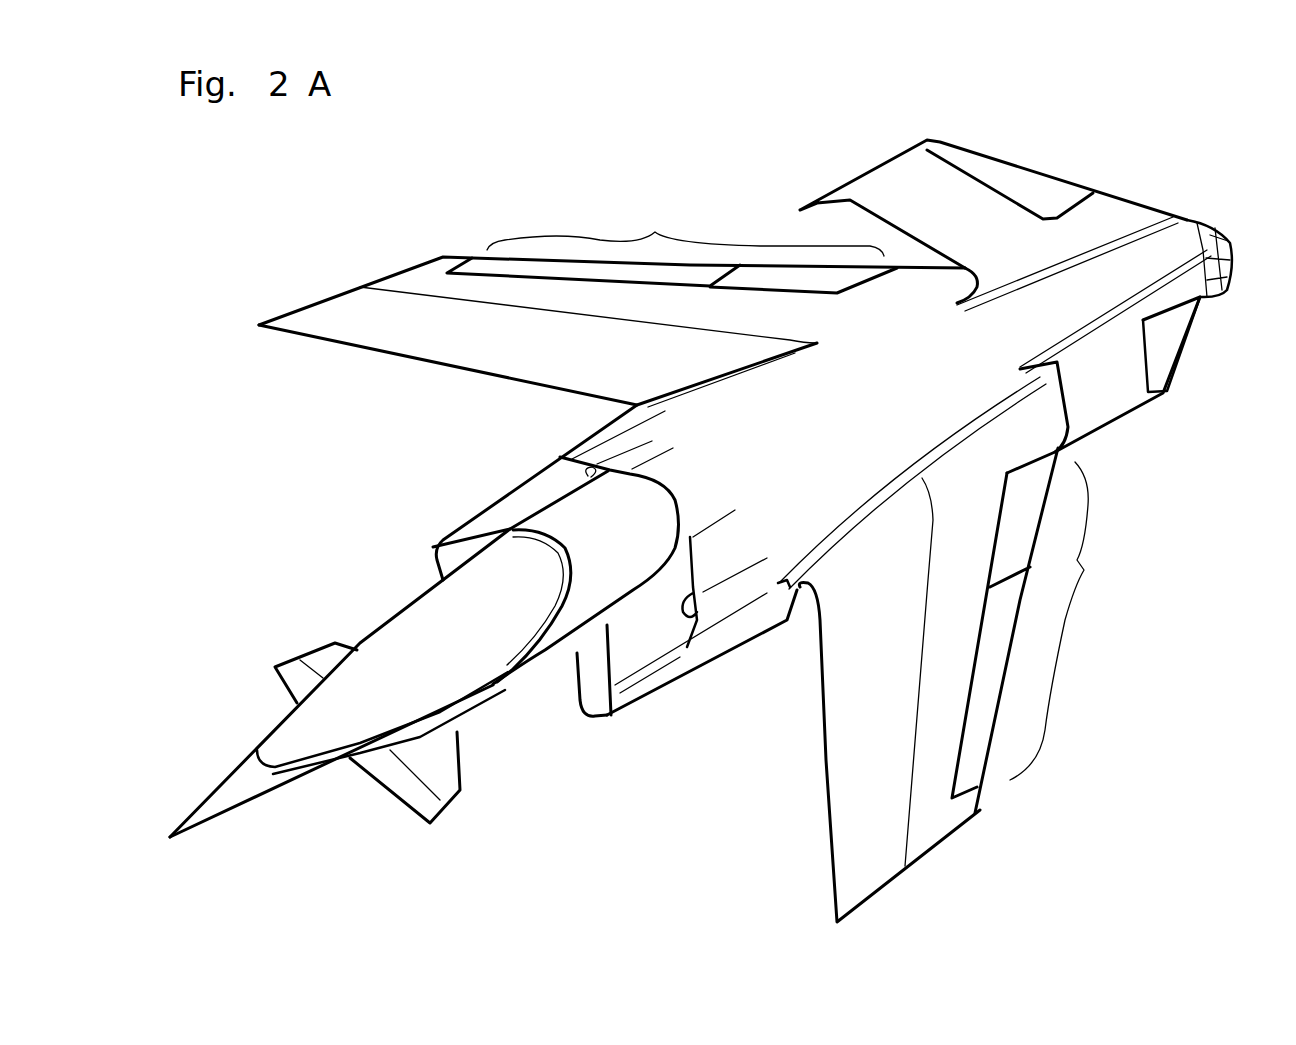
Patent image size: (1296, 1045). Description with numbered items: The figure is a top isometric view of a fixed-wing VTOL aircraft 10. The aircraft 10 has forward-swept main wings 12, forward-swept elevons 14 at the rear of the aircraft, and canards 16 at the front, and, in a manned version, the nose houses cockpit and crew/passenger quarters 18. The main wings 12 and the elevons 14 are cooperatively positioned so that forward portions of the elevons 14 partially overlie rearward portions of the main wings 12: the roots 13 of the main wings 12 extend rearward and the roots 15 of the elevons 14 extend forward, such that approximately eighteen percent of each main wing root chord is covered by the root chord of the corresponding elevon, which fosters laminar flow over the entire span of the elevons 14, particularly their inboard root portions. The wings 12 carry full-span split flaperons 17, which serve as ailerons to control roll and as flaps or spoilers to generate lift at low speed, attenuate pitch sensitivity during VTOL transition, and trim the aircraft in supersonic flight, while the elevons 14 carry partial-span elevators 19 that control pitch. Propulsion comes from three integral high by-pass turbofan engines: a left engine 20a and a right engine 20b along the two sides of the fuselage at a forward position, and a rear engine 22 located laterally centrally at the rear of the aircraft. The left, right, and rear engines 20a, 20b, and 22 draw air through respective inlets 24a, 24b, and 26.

The fixed-wing VTOL aircraft 10 is at (189, 465).
The main wings 12 is at (412, 343).
The roots of the main wings 13 is at (697, 388).
The elevons 14 is at (887, 173).
The roots of the elevons 15 is at (1047, 355).
The canards 16 is at (292, 672).
The split flaperons 17 is at (789, 499).
The cockpit and crew/passenger quarters 18 is at (440, 667).
The elevators 19 is at (1022, 187).
The left engine 20a is at (762, 683).
The right engine 20b is at (536, 443).
The rear engine 22 is at (1103, 262).
The inlet of the left engine 24a is at (567, 713).
The inlet of the right engine 24b is at (455, 553).
The inlet of the rear engine 26 is at (645, 444).